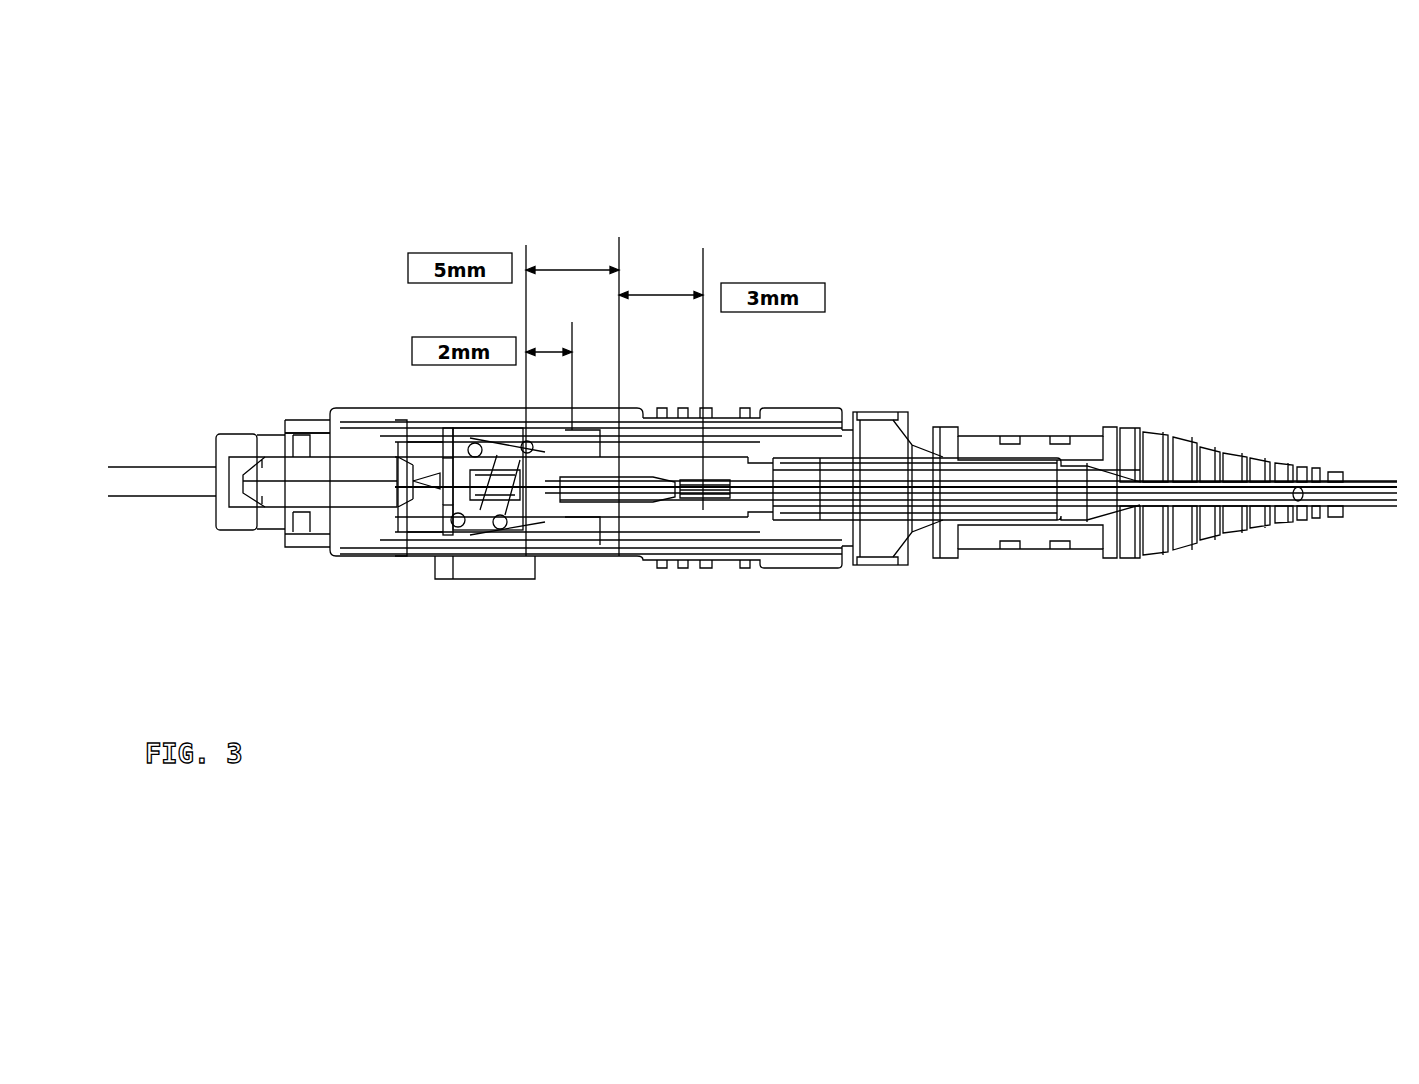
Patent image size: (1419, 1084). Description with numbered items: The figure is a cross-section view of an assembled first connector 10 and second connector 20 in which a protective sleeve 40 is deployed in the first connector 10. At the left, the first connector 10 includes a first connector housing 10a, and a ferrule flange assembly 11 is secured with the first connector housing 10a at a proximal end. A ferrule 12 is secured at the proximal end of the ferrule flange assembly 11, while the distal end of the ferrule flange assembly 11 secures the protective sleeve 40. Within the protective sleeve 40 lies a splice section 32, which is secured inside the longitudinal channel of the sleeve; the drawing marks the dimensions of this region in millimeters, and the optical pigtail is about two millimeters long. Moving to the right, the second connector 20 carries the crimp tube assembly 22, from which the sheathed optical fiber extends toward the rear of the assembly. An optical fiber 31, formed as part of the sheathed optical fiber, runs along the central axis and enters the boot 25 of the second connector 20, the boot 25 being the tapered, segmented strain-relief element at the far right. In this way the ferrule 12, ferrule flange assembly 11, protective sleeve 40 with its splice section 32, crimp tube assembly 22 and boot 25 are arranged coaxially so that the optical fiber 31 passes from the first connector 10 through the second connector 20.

The first connector 10 is at (799, 570).
The first connector housing 10a is at (373, 408).
The ferrule flange assembly 11 is at (420, 531).
The ferrule 12 is at (274, 483).
The second connector 20 is at (971, 436).
The crimp tube assembly 22 is at (962, 514).
The boot 25 is at (1197, 454).
The optical fiber 31 is at (1369, 511).
The splice section 32 is at (618, 508).
The protective sleeve 40 is at (533, 508).